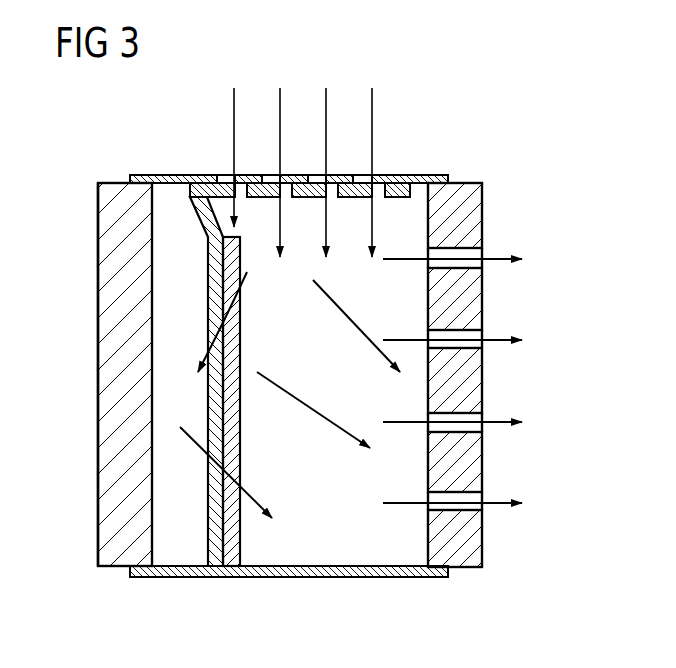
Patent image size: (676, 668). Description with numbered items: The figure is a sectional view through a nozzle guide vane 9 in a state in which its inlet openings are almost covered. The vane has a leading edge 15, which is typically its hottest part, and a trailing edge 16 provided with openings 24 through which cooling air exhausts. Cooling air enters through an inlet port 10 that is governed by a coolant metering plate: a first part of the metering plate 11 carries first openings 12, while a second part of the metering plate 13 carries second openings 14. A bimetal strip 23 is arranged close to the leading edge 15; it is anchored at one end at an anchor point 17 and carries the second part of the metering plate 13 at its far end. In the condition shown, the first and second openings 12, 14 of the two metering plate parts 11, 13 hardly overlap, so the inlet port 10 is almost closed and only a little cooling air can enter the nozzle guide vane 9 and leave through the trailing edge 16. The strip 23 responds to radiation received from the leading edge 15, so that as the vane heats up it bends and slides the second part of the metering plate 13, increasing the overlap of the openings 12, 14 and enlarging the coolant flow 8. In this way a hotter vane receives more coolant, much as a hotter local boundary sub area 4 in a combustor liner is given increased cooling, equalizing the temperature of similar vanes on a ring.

The local boundary sub area 4 is at (117, 442).
The coolant flow 8 is at (372, 103).
The nozzle guide vane 9 is at (119, 147).
The inlet port 10 is at (307, 63).
The first part of the coolant metering plate 11 is at (425, 174).
The first openings 12 is at (362, 175).
The second part of the metering plate 13 is at (405, 197).
The second openings 14 is at (400, 197).
The leading edge 15 is at (98, 340).
The trailing edge 16 is at (482, 383).
The anchor point 17 is at (223, 566).
The bimetal strip 23 is at (222, 537).
The openings 24 is at (475, 494).